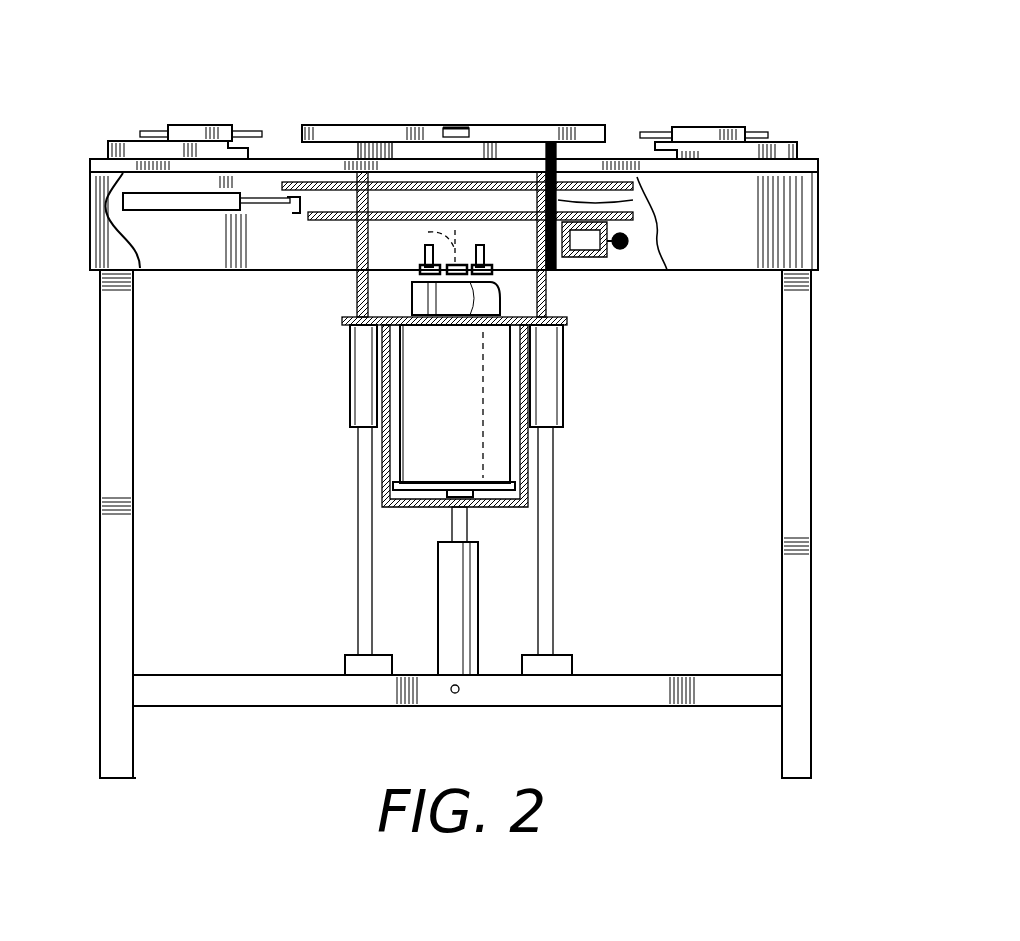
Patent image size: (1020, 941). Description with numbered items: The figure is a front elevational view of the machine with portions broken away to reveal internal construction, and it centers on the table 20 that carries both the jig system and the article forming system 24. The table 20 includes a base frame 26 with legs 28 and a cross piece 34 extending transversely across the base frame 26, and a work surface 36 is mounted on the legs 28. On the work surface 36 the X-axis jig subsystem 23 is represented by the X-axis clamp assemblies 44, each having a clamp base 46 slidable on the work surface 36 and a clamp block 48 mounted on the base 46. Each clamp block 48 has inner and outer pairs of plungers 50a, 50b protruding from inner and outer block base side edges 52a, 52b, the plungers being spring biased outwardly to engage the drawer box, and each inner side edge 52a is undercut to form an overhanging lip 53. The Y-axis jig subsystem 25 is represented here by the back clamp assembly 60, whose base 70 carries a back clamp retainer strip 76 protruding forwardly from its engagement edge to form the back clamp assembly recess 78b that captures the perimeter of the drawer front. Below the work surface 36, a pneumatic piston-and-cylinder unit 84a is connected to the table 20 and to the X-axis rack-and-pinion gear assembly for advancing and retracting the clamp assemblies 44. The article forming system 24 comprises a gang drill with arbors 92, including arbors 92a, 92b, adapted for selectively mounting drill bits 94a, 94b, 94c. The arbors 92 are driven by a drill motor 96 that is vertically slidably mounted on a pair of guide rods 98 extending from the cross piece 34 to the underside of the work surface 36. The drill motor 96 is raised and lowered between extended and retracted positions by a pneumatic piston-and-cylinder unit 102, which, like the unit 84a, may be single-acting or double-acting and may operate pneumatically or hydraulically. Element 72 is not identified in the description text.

The table 20 is at (822, 156).
The X-axis jig subsystem 23 is at (106, 136).
The article forming system 24 is at (590, 501).
The Y-axis jig subsystem 25 is at (307, 124).
The base frame 26 is at (100, 786).
The legs 28 is at (812, 472).
The cross piece 34 is at (723, 675).
The work surface 36 is at (787, 142).
The X-axis clamp assemblies 44 is at (797, 142).
The clamp base 46 is at (127, 141).
The clamp block 48 is at (170, 126).
The inner plungers 50a is at (642, 130).
The outer plungers 50b is at (767, 130).
The inner block base side edge 52a is at (670, 128).
The outer block base side edge 52b is at (747, 128).
The overhanging lip 53 is at (236, 152).
The back clamp assembly 60 is at (604, 124).
The back clamp assembly base 70 is at (387, 141).
The tube 72 is at (633, 201).
The back clamp retainer strip 76 is at (350, 125).
The back clamp assembly recess 78b is at (507, 146).
The pneumatic piston-and-cylinder unit 84a is at (210, 213).
The arbors 92 is at (420, 282).
The arbor 92a is at (490, 282).
The arbor 92b is at (468, 326).
The drill bit 94a is at (513, 248).
The drill bit 94b is at (427, 262).
The drill bit 94c is at (422, 270).
The drill motor 96 is at (467, 422).
The guide rods 98 is at (358, 530).
The pneumatic piston-and-cylinder unit 102 is at (470, 537).